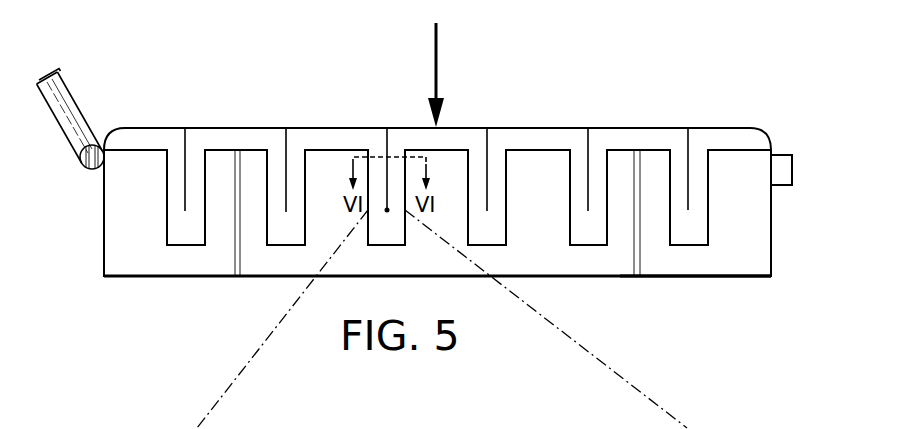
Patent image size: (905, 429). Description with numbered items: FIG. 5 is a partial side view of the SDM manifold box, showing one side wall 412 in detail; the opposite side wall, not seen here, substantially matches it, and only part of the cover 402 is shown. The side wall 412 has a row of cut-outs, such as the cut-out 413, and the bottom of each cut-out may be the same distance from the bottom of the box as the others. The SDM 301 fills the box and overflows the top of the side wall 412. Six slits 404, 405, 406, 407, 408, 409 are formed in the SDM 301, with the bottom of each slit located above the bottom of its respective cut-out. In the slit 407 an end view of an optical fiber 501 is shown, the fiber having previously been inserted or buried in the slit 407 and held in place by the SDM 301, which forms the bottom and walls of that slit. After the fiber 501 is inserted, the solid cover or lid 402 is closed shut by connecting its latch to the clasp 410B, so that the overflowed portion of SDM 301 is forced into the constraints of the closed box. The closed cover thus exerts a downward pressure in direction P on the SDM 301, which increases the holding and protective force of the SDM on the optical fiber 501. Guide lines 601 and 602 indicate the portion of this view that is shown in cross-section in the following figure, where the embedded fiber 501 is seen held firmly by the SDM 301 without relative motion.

The SDM 301 is at (661, 127).
The cover 402 is at (55, 92).
The slit 404 is at (688, 135).
The slit 405 is at (588, 135).
The slit 406 is at (487, 135).
The slit 407 is at (390, 135).
The slit 408 is at (286, 135).
The slit 409 is at (185, 135).
The clasp 410B is at (775, 153).
The side wall 412 is at (712, 262).
The cut-out 413 is at (575, 245).
The optical fiber 501 is at (387, 212).
The guide line 601 is at (268, 336).
The guide line 602 is at (622, 377).
The direction of downward force P is at (439, 52).